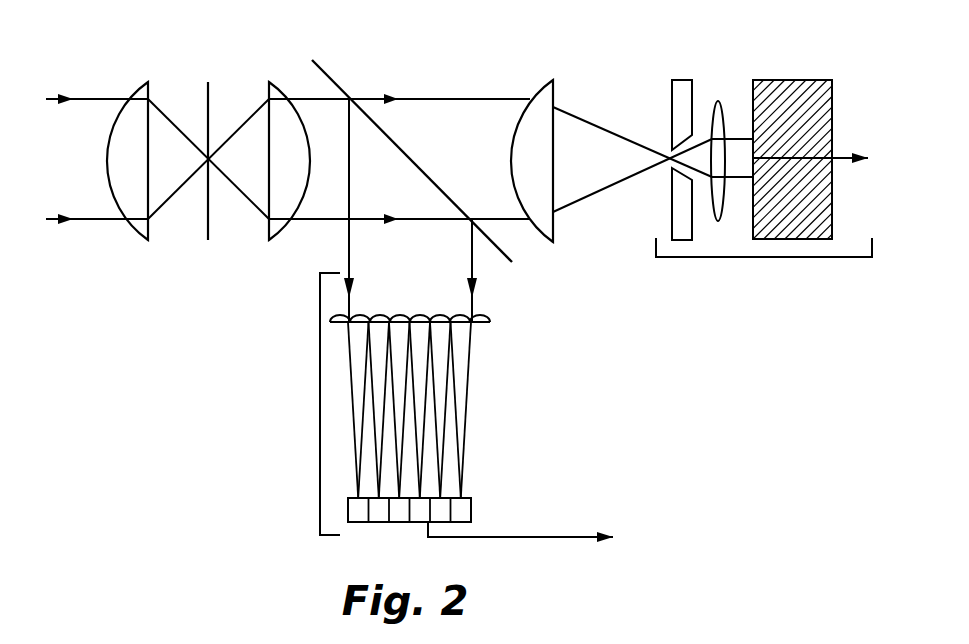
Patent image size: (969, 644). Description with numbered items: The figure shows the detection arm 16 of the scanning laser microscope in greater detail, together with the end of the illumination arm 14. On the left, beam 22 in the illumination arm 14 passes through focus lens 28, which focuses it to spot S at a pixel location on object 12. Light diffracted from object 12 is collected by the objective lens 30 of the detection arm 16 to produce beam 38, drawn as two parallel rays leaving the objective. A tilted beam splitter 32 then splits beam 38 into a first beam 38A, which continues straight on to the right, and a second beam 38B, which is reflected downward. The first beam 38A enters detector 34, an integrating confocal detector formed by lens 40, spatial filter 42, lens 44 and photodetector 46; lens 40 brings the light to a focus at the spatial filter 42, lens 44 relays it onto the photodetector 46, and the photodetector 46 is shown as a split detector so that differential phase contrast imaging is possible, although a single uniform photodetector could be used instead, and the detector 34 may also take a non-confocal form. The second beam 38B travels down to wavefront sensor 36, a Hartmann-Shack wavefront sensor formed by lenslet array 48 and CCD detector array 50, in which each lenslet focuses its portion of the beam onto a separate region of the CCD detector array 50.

The object 12 is at (208, 240).
The illumination arm 14 is at (116, 310).
The detection arm 16 is at (544, 50).
The beam 22 is at (102, 98).
The focus lens 28 is at (147, 82).
The spot S is at (206, 152).
The objective lens 30 is at (269, 82).
The beam splitter 32 is at (320, 66).
The detector 34 is at (760, 258).
The wavefront sensor 36 is at (318, 466).
The beam 38 is at (327, 99).
The first beam 38A is at (458, 98).
The second beam 38B is at (474, 268).
The lens 40 is at (554, 84).
The spatial filter 42 is at (680, 80).
The lens 44 is at (721, 103).
The photodetector 46 is at (797, 80).
The lenslet array 48 is at (485, 322).
The CCD detector array 50 is at (472, 508).